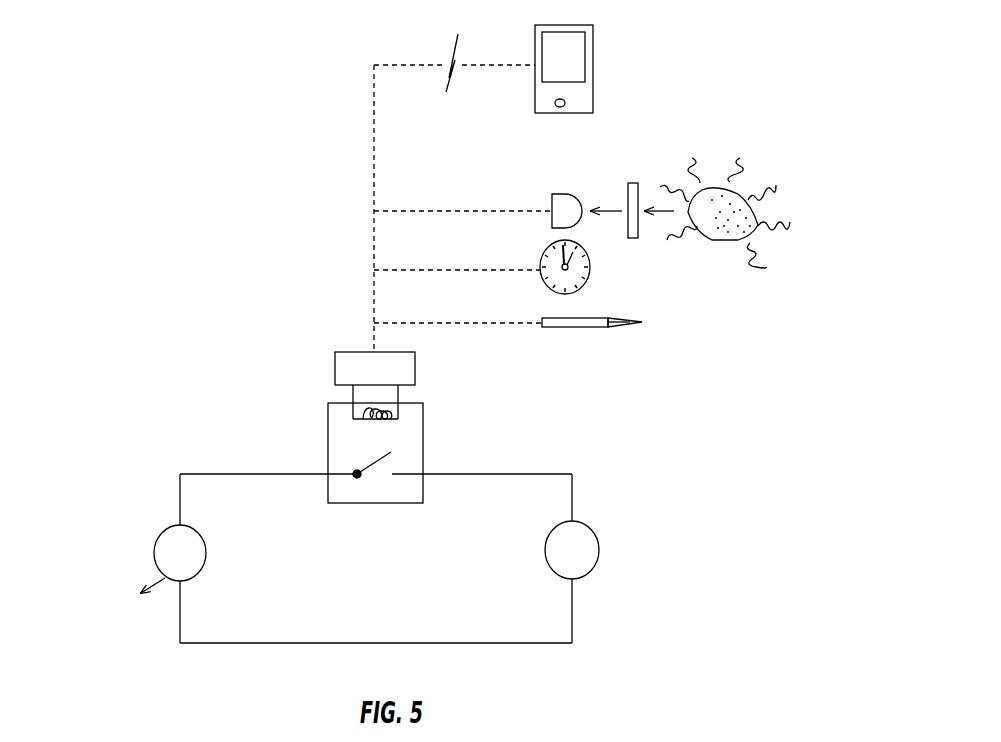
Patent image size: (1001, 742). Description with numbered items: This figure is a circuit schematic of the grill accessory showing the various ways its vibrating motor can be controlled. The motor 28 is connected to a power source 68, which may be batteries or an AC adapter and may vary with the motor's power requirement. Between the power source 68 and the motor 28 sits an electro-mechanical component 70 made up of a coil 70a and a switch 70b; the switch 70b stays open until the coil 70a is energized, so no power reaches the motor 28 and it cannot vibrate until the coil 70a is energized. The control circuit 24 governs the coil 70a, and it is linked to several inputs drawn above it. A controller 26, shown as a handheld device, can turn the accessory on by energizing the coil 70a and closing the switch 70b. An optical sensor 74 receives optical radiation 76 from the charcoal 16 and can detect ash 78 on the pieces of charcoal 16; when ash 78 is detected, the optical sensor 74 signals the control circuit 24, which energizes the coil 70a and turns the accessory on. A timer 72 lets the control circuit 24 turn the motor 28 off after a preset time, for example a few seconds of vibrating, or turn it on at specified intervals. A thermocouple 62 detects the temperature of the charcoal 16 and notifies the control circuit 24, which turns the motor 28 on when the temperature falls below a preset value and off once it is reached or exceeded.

The charcoal 16 is at (728, 200).
The control circuit 24 is at (335, 369).
The controller 26 is at (593, 58).
The motor 28 is at (598, 545).
The thermocouple 62 is at (580, 328).
The power source 68 is at (157, 545).
The electro-mechanical component 70 is at (426, 428).
The coil 70a is at (372, 420).
The switch 70b is at (370, 466).
The timer 72 is at (592, 270).
The optical sensor 74 is at (565, 203).
The emitted radiation / odor 76 is at (707, 247).
The ash 78 is at (634, 183).